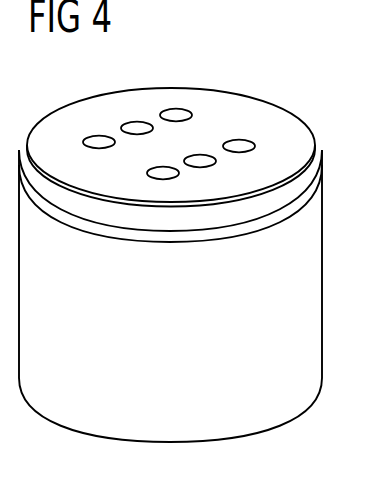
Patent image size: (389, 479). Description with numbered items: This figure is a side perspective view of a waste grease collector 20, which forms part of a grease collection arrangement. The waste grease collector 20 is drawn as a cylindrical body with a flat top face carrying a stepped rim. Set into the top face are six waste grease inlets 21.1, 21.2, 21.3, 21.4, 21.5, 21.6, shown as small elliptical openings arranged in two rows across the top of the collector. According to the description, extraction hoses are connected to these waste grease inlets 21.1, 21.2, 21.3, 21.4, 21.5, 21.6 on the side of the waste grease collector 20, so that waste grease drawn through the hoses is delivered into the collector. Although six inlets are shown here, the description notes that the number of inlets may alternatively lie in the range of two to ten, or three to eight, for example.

The waste grease collector 20 is at (72, 413).
The waste grease inlet 21.1 is at (100, 142).
The waste grease inlet 21.2 is at (137, 128).
The waste grease inlet 21.3 is at (176, 115).
The waste grease inlet 21.4 is at (163, 173).
The waste grease inlet 21.5 is at (200, 161).
The waste grease inlet 21.6 is at (239, 148).